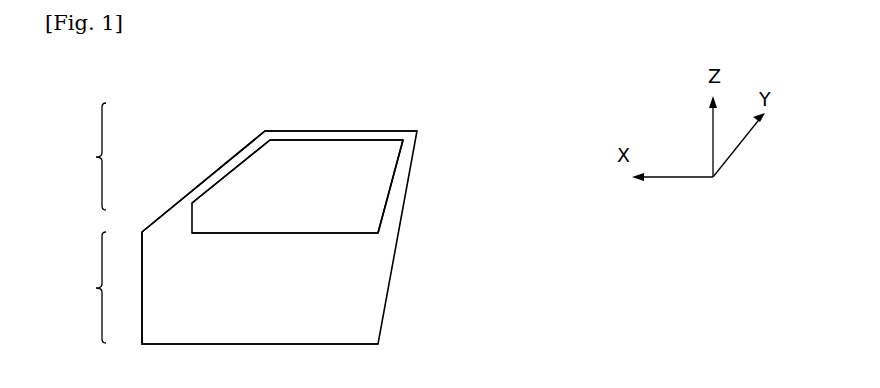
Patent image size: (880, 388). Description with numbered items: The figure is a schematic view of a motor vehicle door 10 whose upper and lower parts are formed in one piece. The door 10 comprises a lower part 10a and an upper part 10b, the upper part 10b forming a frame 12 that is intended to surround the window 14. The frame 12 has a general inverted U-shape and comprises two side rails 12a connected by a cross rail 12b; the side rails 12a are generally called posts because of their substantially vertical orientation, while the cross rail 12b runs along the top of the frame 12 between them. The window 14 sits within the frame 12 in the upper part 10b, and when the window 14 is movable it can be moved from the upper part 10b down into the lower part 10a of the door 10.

The door 10 is at (437, 141).
The lower part 10a is at (213, 288).
The upper part 10b is at (230, 167).
The frame 12 is at (422, 182).
The side rails 12a is at (212, 180).
The cross rail 12b is at (333, 133).
The window 14 is at (285, 205).